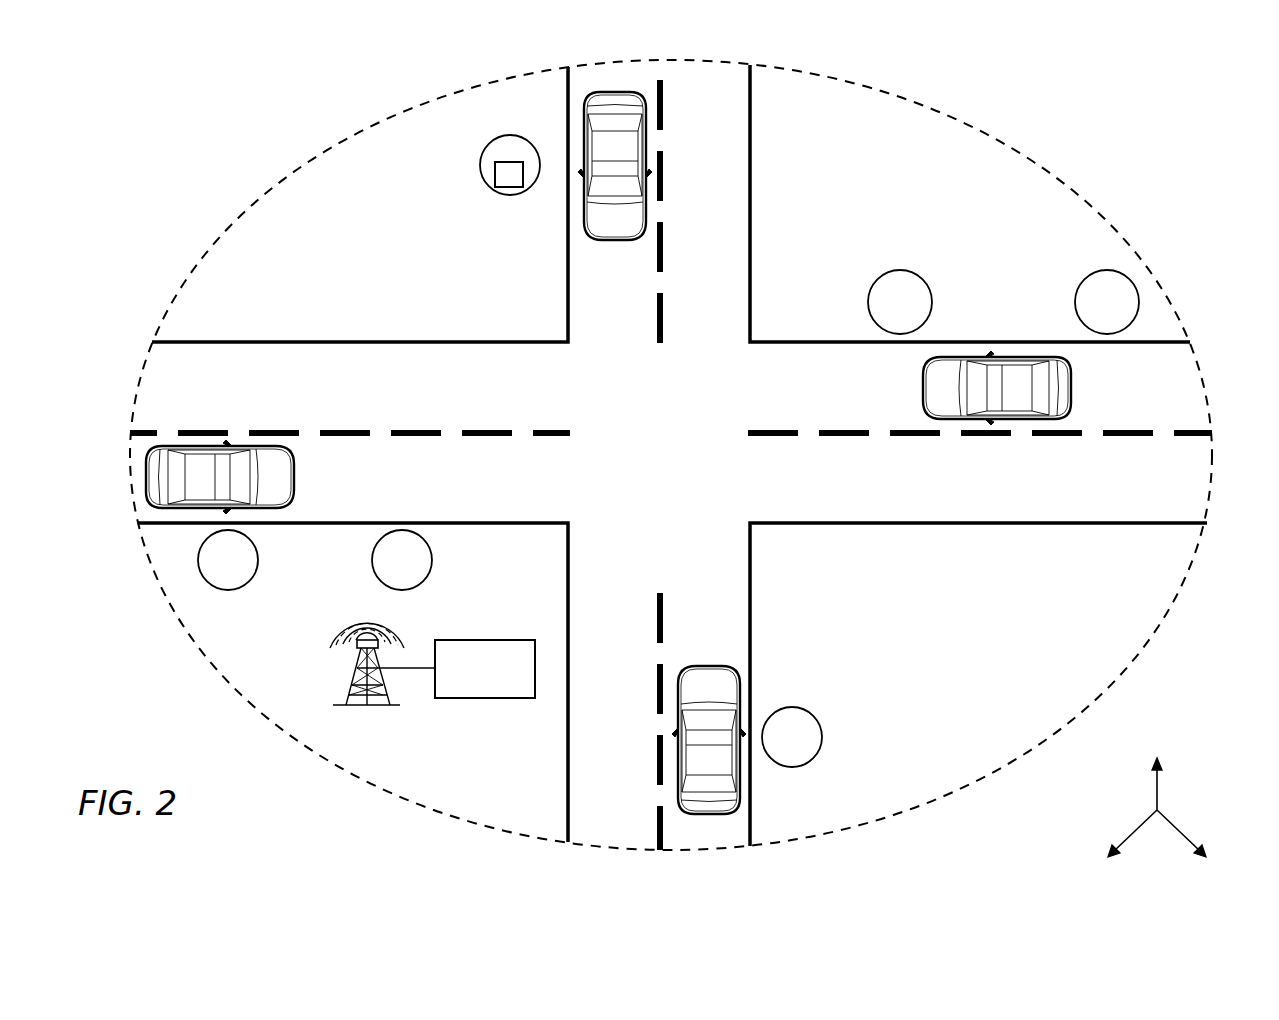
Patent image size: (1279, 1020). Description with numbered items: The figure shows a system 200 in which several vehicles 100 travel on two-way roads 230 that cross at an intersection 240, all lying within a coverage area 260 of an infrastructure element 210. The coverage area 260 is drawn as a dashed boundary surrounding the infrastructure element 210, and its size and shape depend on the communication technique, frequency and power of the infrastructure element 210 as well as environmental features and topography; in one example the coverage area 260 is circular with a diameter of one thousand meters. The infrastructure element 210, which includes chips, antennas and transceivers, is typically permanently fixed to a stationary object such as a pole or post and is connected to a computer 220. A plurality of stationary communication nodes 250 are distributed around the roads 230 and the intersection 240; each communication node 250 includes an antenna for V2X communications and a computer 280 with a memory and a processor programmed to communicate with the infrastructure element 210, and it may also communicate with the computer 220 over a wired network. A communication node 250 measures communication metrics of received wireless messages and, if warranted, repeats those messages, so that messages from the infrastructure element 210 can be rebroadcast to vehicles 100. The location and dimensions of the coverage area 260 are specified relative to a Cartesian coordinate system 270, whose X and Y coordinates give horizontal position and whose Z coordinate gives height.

The vehicle 100 is at (648, 130).
The system 200 is at (268, 94).
The infrastructure element 210 is at (353, 672).
The computer 220 is at (485, 669).
The road 230 is at (752, 175).
The intersection 240 is at (733, 494).
The stationary communication node 250 is at (482, 165).
The coverage area 260 is at (263, 193).
The Cartesian coordinate system 270 is at (1207, 784).
The computer 280 is at (505, 190).